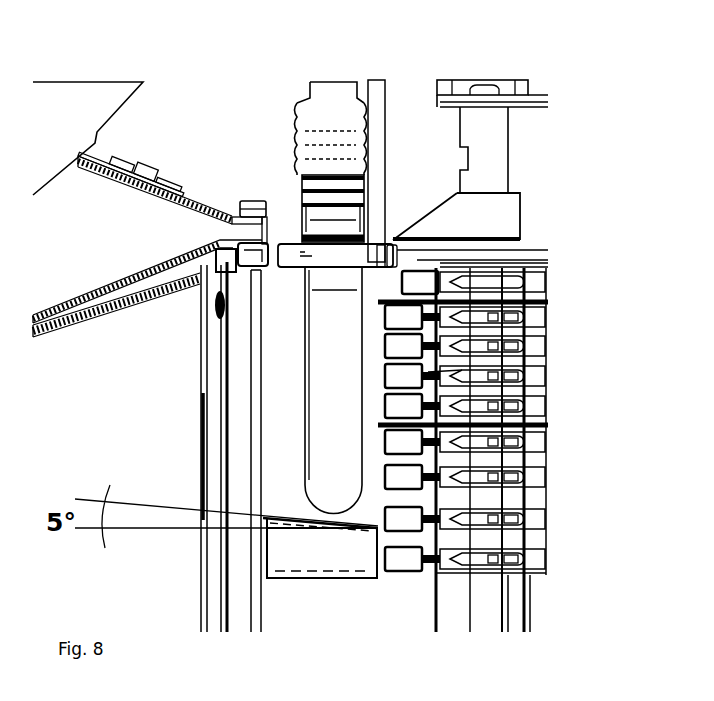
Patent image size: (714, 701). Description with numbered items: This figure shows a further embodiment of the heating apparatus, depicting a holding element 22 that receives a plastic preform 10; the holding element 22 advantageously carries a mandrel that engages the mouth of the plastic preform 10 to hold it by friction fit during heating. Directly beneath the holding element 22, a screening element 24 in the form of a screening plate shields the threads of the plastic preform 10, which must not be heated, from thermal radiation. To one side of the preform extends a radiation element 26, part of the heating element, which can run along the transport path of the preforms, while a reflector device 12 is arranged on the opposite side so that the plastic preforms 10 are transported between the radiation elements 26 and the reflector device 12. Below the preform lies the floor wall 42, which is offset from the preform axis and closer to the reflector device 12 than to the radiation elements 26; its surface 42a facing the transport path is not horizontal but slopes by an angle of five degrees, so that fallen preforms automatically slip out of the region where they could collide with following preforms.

The plastic preform 10 is at (320, 406).
The reflector device 12 is at (255, 393).
The holding element 22 is at (340, 219).
The screening element 24 is at (353, 253).
The radiation element 26 is at (547, 382).
The floor wall 42 is at (323, 562).
The surface of the floor wall 42a is at (293, 530).